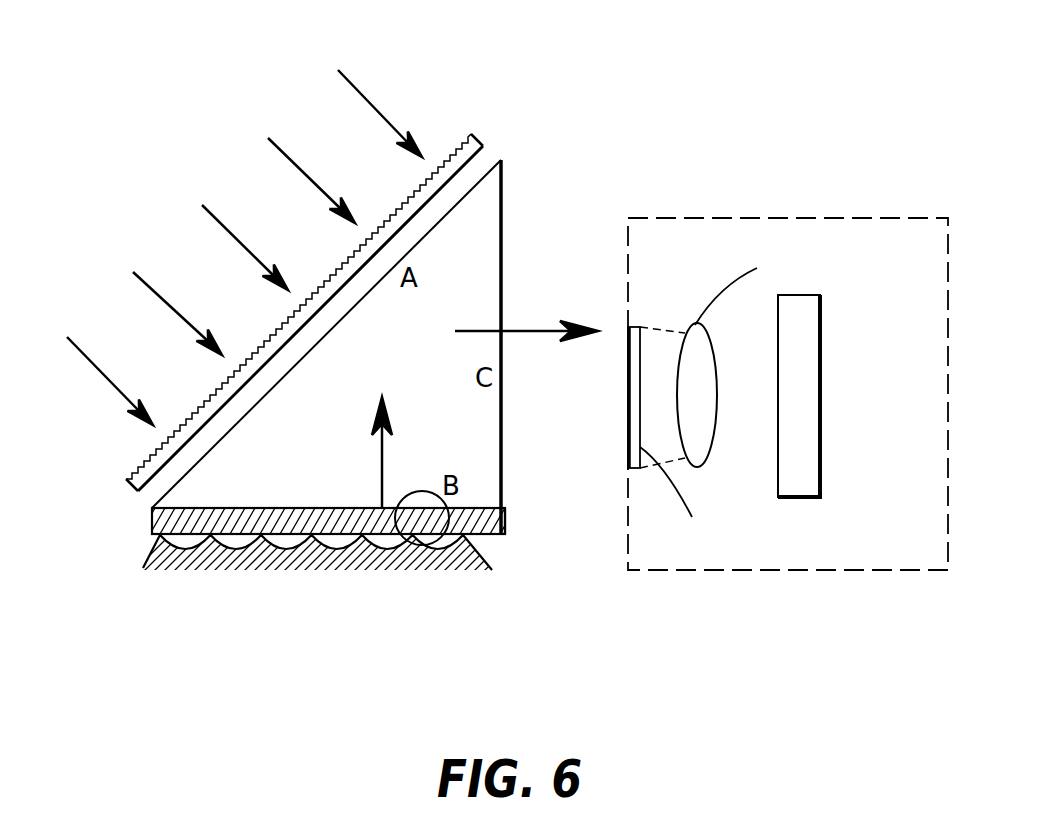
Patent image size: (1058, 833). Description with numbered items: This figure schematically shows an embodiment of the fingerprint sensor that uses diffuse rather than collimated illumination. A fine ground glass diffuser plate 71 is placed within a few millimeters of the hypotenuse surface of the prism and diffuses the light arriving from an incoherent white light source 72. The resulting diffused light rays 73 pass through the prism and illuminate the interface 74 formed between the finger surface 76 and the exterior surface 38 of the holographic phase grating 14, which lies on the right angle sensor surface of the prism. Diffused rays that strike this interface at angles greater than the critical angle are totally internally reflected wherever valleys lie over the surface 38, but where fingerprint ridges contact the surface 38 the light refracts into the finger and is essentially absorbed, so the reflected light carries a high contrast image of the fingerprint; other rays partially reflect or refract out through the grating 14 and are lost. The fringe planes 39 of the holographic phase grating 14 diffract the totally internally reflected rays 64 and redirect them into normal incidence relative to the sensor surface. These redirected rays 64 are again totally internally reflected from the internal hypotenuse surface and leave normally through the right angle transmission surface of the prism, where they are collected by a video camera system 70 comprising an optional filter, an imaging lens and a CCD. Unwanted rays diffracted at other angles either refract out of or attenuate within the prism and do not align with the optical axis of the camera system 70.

The holographic phase grating 14 is at (513, 550).
The exterior surface 38 is at (201, 543).
The fringe planes 39 is at (504, 520).
The reflected rays 64 is at (527, 330).
The video camera system 70 is at (760, 209).
The ground glass diffuser plate 71 is at (461, 137).
The incoherent white light source 72 is at (210, 244).
The diffused light rays 73 is at (380, 112).
The interface 74 is at (280, 507).
The finger surface 76 is at (401, 541).